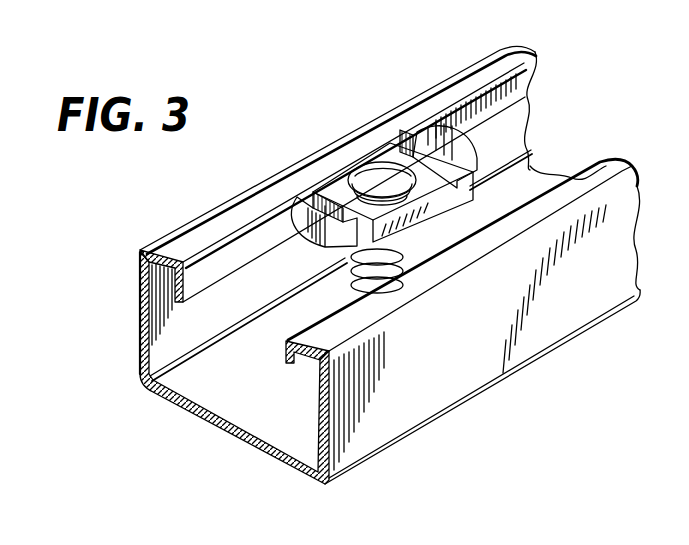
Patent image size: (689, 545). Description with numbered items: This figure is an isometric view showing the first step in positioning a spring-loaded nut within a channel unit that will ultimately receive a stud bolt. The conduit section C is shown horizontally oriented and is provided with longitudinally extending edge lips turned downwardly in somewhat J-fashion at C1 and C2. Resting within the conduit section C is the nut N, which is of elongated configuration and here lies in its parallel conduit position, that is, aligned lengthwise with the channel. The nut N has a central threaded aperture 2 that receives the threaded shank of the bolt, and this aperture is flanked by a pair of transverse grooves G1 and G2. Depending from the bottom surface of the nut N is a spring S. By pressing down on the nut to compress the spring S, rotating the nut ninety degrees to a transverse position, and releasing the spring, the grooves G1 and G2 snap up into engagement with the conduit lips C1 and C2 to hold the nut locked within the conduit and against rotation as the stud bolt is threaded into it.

The conduit section C is at (502, 349).
The conduit lip C1 is at (287, 363).
The conduit lip C2 is at (178, 302).
The nut N is at (331, 183).
The central threaded aperture 2 is at (372, 184).
The transverse groove G1 is at (403, 133).
The transverse groove G2 is at (302, 198).
The spring S is at (350, 292).